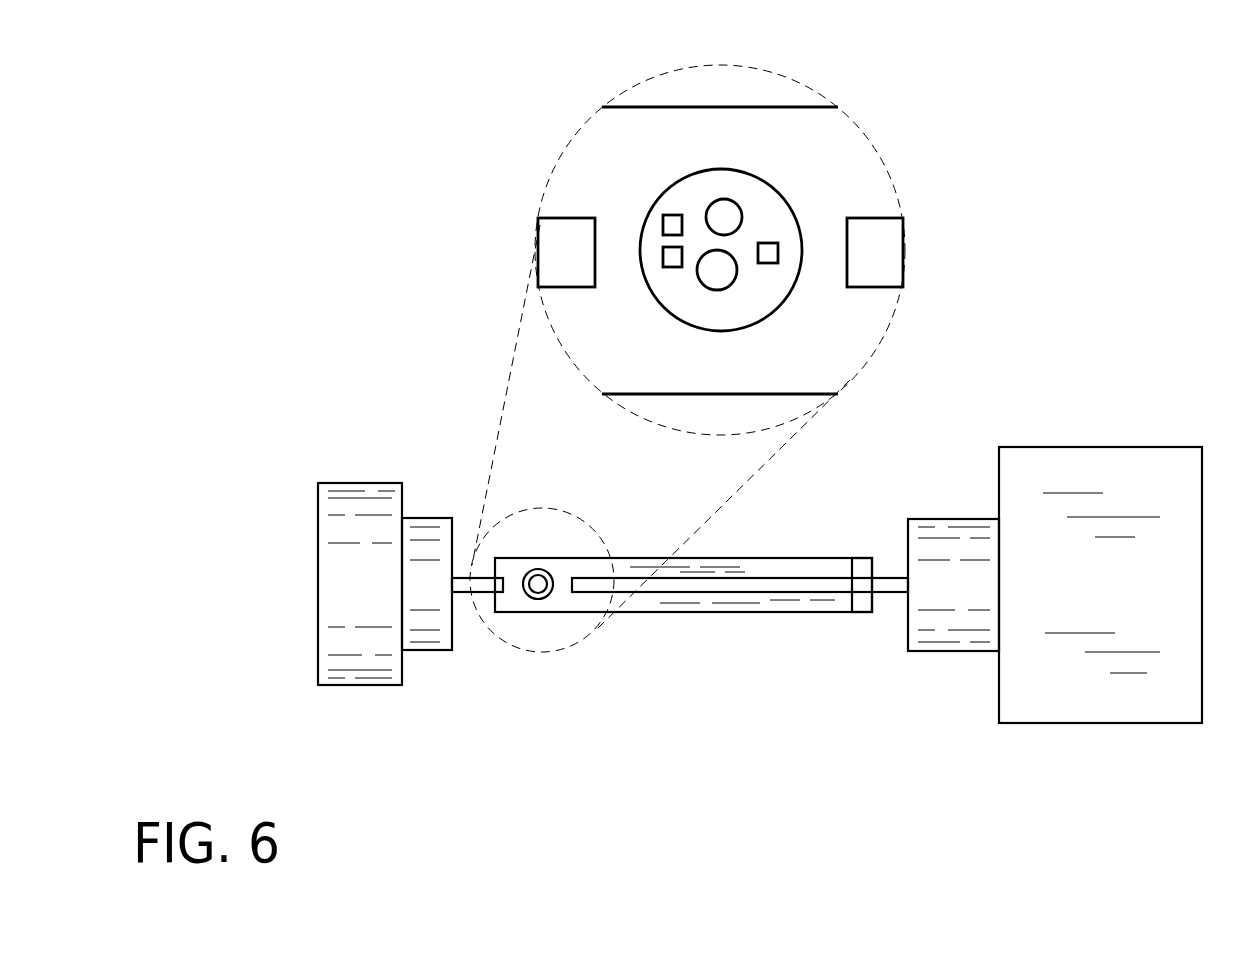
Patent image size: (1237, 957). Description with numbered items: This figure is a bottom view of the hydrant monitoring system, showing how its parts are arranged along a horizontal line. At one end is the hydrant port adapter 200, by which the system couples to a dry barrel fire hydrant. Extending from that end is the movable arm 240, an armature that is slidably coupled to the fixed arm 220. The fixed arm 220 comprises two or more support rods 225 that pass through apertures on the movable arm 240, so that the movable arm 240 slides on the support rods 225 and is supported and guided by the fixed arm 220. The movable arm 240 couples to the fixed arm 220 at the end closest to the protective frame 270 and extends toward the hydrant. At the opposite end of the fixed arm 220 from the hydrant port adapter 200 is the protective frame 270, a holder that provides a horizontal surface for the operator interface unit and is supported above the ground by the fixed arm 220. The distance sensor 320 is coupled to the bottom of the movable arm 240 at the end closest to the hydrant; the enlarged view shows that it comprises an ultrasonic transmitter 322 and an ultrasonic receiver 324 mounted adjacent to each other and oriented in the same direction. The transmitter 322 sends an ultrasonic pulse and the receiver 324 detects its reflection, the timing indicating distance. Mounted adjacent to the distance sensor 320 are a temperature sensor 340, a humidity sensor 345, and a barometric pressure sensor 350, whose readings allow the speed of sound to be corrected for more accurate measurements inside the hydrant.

The hydrant port adapter 200 is at (358, 510).
The movable arm 240 is at (722, 107).
The fixed arm 220 is at (837, 587).
The protective frame 270 is at (1082, 712).
The distance sensor 320 is at (541, 600).
The ultrasonic transmitter 322 is at (733, 213).
The ultrasonic receiver 324 is at (727, 286).
The temperature sensor 340 is at (663, 223).
The humidity sensor 345 is at (663, 265).
The barometric pressure sensor 350 is at (776, 246).
The support rods 225 is at (880, 262).